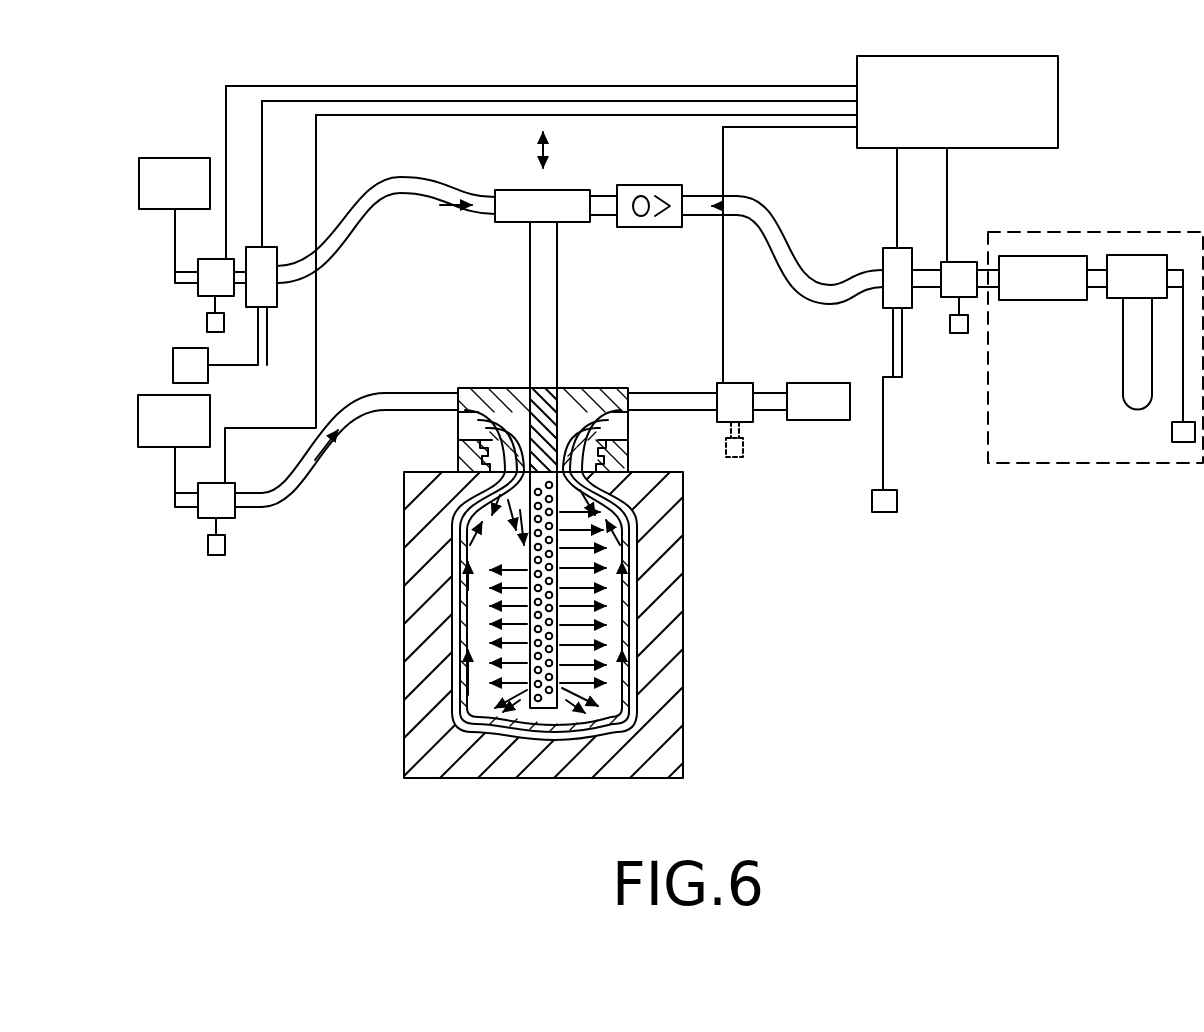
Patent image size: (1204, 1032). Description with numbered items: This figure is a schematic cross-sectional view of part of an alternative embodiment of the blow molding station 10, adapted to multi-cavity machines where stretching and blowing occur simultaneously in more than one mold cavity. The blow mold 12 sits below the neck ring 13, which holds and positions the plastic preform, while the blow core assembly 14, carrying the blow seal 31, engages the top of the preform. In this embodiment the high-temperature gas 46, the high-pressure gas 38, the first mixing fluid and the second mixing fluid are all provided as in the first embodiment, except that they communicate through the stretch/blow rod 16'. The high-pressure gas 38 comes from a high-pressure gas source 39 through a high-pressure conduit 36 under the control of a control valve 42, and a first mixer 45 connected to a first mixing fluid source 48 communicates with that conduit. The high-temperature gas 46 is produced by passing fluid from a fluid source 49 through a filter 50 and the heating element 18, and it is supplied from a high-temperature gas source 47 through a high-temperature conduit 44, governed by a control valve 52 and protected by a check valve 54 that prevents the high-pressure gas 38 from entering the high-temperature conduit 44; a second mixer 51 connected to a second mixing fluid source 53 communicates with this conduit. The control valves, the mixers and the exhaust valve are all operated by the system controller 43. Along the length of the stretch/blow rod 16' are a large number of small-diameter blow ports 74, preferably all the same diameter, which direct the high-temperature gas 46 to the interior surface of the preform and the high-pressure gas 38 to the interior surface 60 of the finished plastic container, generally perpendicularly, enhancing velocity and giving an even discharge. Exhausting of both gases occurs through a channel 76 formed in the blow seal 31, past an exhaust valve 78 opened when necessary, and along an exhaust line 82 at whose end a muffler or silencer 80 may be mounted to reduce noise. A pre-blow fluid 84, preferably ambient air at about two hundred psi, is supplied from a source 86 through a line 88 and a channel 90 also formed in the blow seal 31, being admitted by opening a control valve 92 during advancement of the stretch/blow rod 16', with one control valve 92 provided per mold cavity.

The blow molding station 10 is at (705, 66).
The blow mold 12 is at (396, 692).
The neck ring 13 is at (460, 455).
The blow core assembly 14 is at (496, 321).
The stretch/blow rod 16' is at (610, 601).
The heating element 18 is at (1040, 256).
The blow seal 31 is at (470, 385).
The high-pressure conduit 36 is at (372, 218).
The high-pressure gas 38 is at (447, 196).
The high-pressure gas source 39 is at (170, 157).
The control valve 42 is at (200, 296).
The system controller 43 is at (1058, 122).
The high-temperature conduit 44 is at (830, 303).
The first mixer 45 is at (277, 308).
The high-temperature gas 46 is at (740, 196).
The high-temperature gas source 47 is at (988, 440).
The first mixing fluid source 48 is at (208, 375).
The fluid source 49 is at (1172, 428).
The filter 50 is at (1137, 255).
The second mixer 51 is at (883, 248).
The control valve 52 is at (958, 262).
The second mixing fluid source 53 is at (882, 512).
The check valve 54 is at (648, 227).
The interior surface 60 is at (470, 607).
The blow ports 74 is at (555, 627).
The channel 76 is at (628, 411).
The exhaust valve 78 is at (740, 383).
The muffler or silencer 80 is at (824, 420).
The exhaust line 82 is at (765, 410).
The pre-blow fluid 84 is at (465, 492).
The source 86 is at (210, 420).
The line 88 is at (356, 398).
The channel 90 is at (458, 436).
The control valve 92 is at (200, 518).